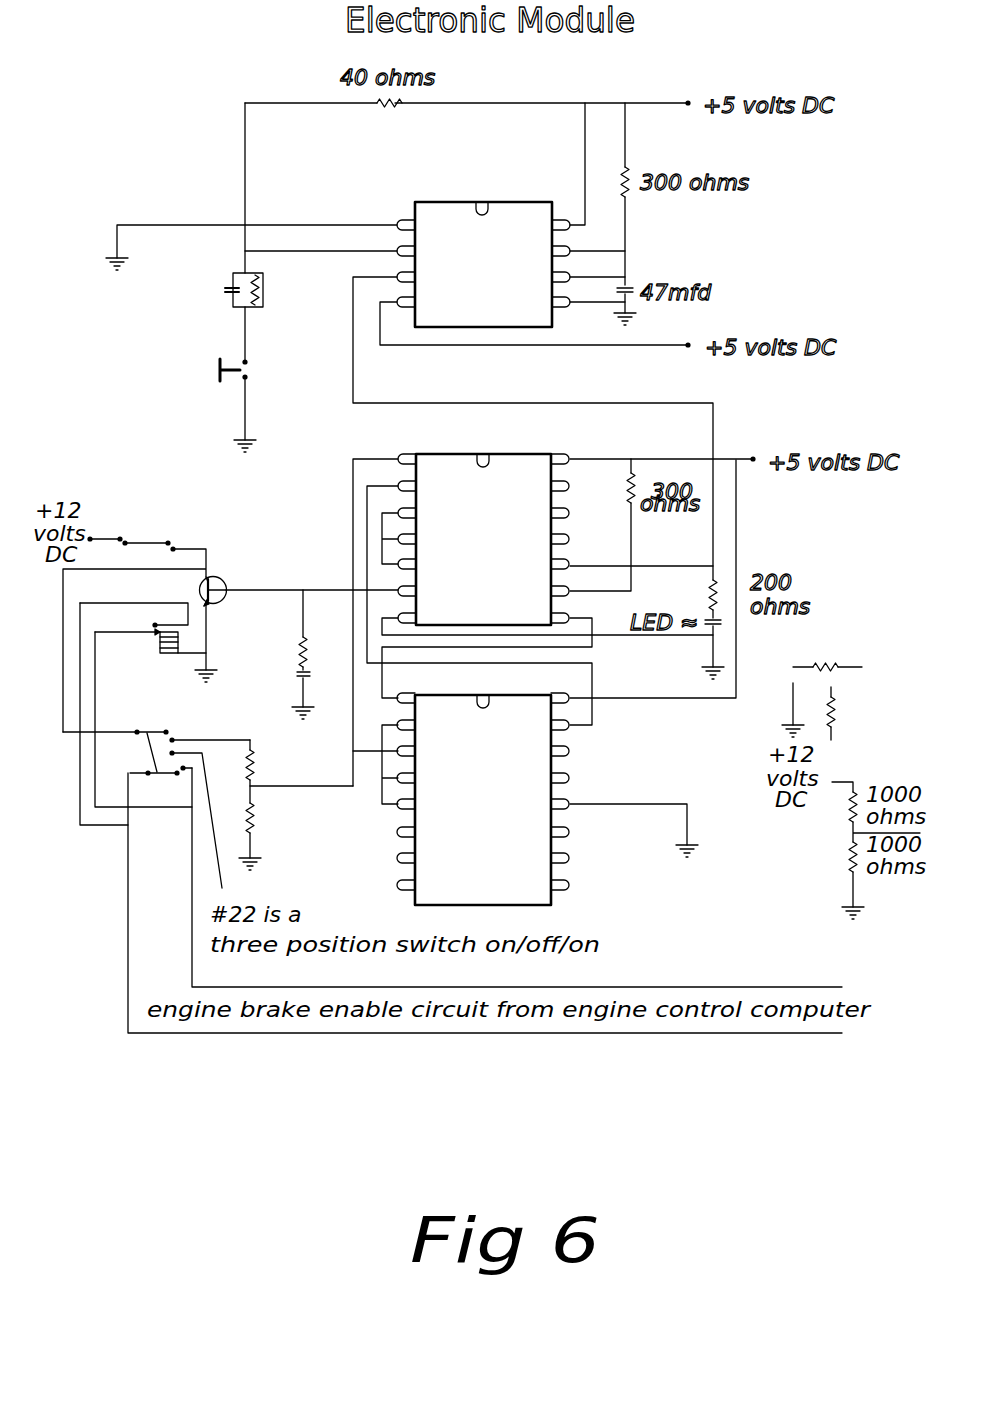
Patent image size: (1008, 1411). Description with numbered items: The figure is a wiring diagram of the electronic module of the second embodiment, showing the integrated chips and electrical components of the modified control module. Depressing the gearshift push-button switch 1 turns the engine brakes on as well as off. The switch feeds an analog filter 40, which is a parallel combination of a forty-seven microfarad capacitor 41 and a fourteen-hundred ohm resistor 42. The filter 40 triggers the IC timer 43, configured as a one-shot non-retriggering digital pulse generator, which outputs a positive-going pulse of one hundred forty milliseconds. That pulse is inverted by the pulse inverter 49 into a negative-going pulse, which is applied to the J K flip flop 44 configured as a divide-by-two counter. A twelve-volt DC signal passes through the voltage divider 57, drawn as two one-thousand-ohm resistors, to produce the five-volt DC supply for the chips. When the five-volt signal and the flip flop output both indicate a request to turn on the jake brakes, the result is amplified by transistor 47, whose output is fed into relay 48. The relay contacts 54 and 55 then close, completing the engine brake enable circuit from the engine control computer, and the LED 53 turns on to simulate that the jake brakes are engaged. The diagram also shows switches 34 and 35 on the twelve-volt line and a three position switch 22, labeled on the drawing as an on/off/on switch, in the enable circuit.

The gearshift push-button switch 1 is at (218, 370).
The three position switch 22 is at (148, 736).
The switch 34 is at (111, 524).
The switch 35 is at (154, 528).
The analog filter 40 is at (234, 274).
The 47 microfarad capacitor 41 is at (189, 298).
The 1400 ohm resistor 42 is at (291, 309).
The 555 IC timer 43 is at (496, 301).
The 7476 J K flip flop 44 is at (495, 828).
The transistor 47 is at (225, 581).
The relay 48 is at (155, 659).
The 7400 pulse inverter 49 is at (495, 590).
The LED 53 is at (288, 654).
The relay contact 54 is at (274, 595).
The relay contact 55 is at (150, 616).
The voltage divider 57 is at (265, 804).